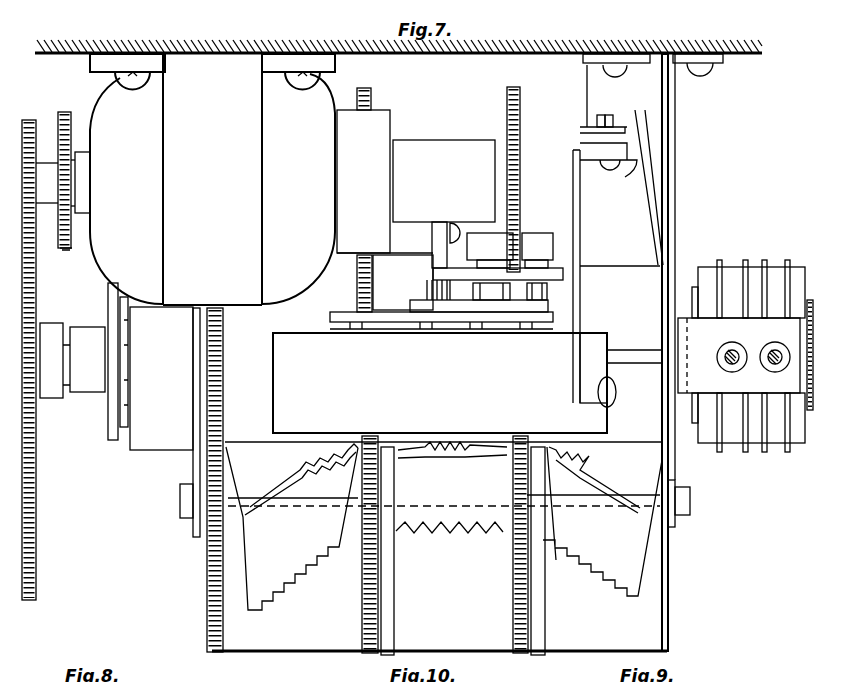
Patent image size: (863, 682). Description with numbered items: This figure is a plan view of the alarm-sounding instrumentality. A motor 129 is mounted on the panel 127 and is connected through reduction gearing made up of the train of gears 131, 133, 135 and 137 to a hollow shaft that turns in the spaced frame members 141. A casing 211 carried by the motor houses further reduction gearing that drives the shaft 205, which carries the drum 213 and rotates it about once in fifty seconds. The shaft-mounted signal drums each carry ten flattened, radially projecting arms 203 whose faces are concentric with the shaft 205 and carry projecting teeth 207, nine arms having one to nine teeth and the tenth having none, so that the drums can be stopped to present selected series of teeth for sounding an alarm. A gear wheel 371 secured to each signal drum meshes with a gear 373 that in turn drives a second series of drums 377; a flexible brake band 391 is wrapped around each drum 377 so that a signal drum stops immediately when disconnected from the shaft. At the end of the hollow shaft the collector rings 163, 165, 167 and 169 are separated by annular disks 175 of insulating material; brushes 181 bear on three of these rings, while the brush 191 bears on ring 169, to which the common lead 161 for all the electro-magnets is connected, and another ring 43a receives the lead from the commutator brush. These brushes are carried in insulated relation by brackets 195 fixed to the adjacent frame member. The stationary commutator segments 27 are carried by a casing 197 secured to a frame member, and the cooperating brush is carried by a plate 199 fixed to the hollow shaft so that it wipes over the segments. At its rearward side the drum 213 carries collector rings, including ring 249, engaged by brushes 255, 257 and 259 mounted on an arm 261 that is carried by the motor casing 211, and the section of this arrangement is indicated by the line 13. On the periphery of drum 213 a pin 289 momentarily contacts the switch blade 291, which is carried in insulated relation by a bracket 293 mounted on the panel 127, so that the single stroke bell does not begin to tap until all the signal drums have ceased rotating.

The panel 127 is at (512, 48).
The motor 129 is at (328, 92).
The gear 131 is at (71, 142).
The gear 133 is at (65, 250).
The gear 135 is at (26, 120).
The gear 137 is at (36, 296).
The frame members 141 is at (670, 196).
The Fig. 13 section indication 13 is at (304, 313).
The commutator segments 27 is at (124, 392).
The collector ring 43a is at (792, 262).
The common lead 161 is at (800, 382).
The collector ring 163 is at (758, 452).
The collector ring 165 is at (724, 452).
The collector ring 167 is at (708, 452).
The collector ring 169 is at (781, 452).
The annular disk 175 is at (742, 270).
The brushes 181 is at (733, 364).
The brush 191 is at (777, 348).
The brackets 195 is at (700, 318).
The casing 197 is at (172, 452).
The plate 199 is at (112, 414).
The arms 203 is at (626, 110).
The shaft 205 is at (433, 272).
The teeth 207 is at (626, 160).
The casing 211 is at (447, 148).
The drum 213 is at (273, 415).
The collector ring 249 is at (345, 312).
The brush 255 is at (540, 240).
The brush 257 is at (492, 225).
The brush 259 is at (474, 230).
The arm 261 is at (447, 275).
The pin 289 is at (612, 402).
The switch blade 291 is at (590, 302).
The bracket 293 is at (574, 94).
The gear wheel 371 is at (207, 571).
The gear 373 is at (372, 100).
The drums 377 is at (250, 652).
The brake band 391 is at (394, 604).